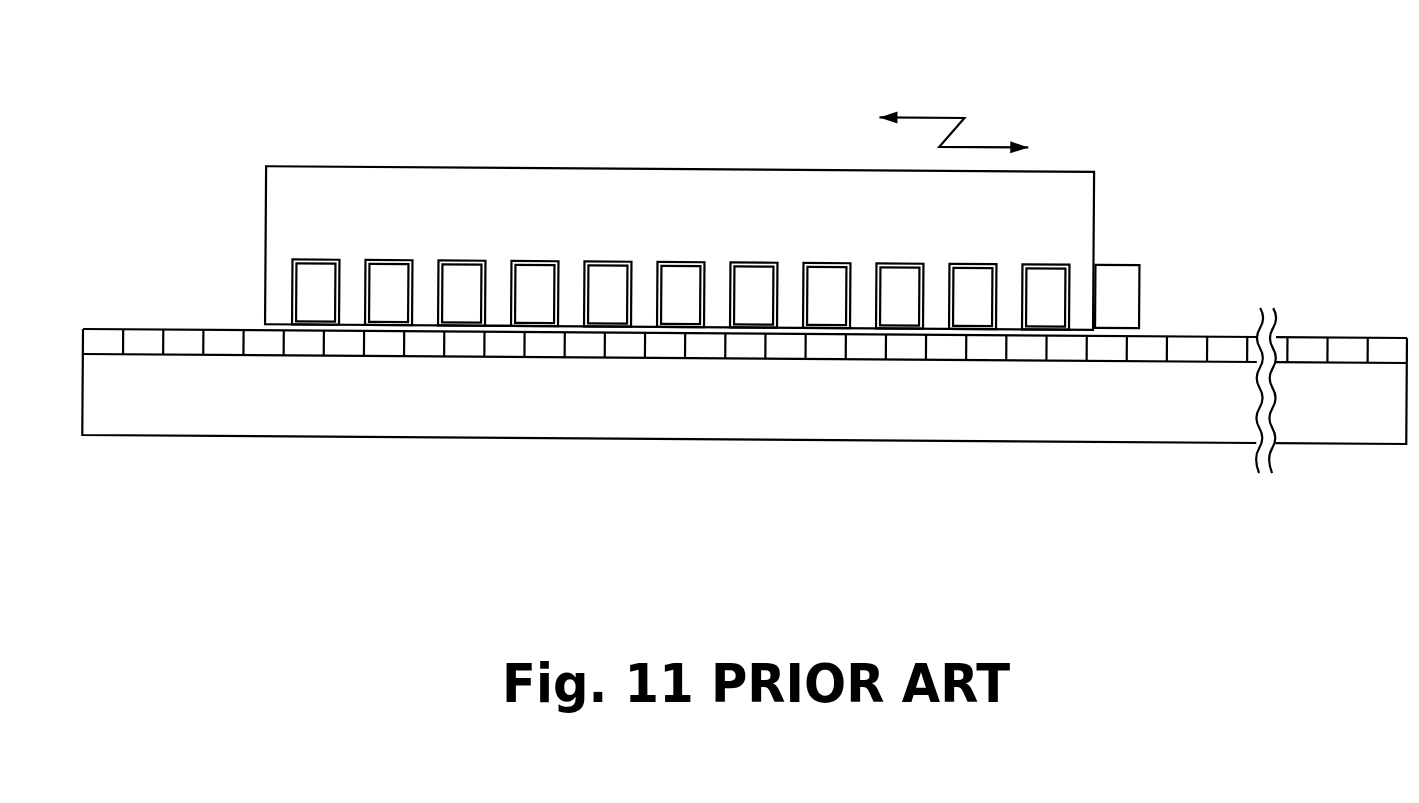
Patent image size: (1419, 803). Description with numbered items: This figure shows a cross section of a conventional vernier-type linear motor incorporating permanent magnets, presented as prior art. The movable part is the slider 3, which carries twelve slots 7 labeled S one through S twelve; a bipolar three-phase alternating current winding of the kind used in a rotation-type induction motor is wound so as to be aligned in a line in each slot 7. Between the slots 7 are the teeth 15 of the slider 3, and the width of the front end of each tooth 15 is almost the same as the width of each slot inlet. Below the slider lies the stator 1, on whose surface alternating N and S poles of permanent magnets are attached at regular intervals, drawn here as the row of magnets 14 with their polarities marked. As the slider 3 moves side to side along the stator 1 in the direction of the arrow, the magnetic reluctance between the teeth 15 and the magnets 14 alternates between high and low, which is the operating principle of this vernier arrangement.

The stator 1 is at (670, 414).
The slider 3 is at (632, 210).
The slot 7 is at (460, 270).
The magnetized track 14 is at (502, 342).
The tooth 15 is at (502, 300).